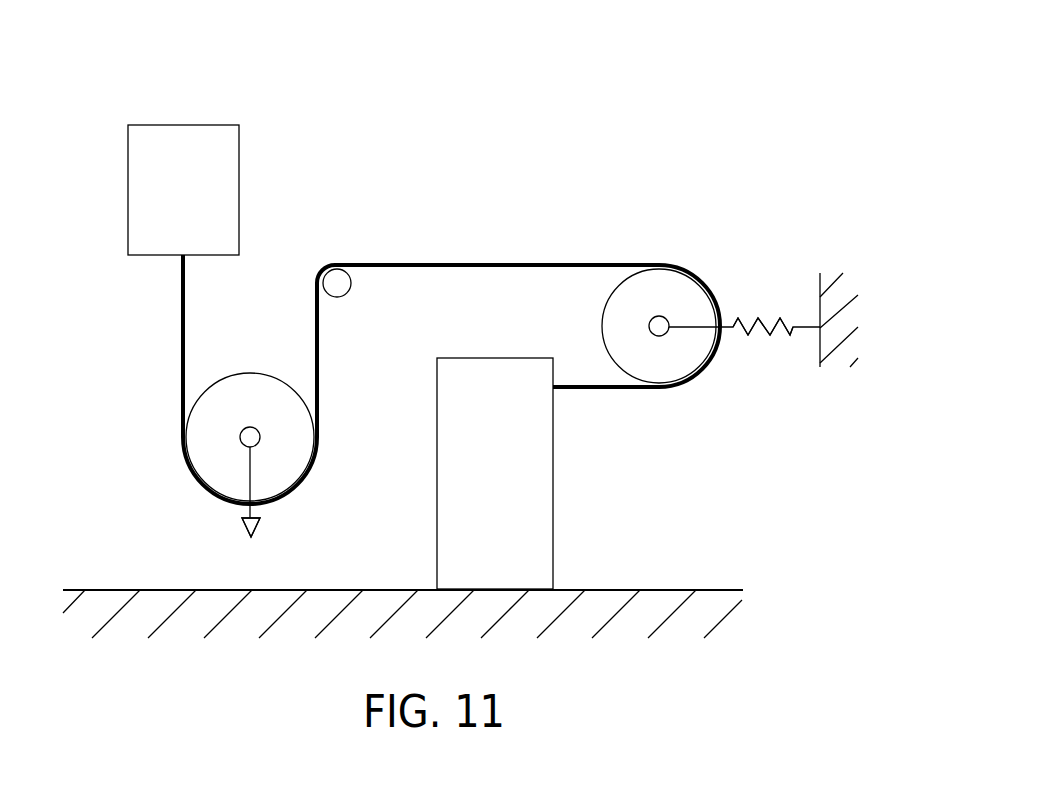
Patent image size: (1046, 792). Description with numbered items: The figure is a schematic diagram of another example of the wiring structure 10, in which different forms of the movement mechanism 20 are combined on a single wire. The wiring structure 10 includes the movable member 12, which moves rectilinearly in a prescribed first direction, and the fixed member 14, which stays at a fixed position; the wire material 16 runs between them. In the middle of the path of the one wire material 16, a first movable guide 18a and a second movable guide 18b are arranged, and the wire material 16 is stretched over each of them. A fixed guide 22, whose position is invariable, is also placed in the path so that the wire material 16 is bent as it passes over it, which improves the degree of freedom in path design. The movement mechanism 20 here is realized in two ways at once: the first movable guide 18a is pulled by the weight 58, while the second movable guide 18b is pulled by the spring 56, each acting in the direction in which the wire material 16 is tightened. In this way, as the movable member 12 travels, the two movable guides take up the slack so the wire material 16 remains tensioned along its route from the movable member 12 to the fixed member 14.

The wiring structure 10 is at (434, 118).
The movable member 12 is at (198, 122).
The fixed member 14 is at (520, 537).
The wire material 16 is at (492, 262).
The first movable guide 18a is at (293, 457).
The second movable guide 18b is at (659, 297).
The movement mechanism 20 is at (517, 427).
The fixed guide 22 is at (337, 283).
The spring 56 is at (773, 337).
The weight 58 is at (242, 522).